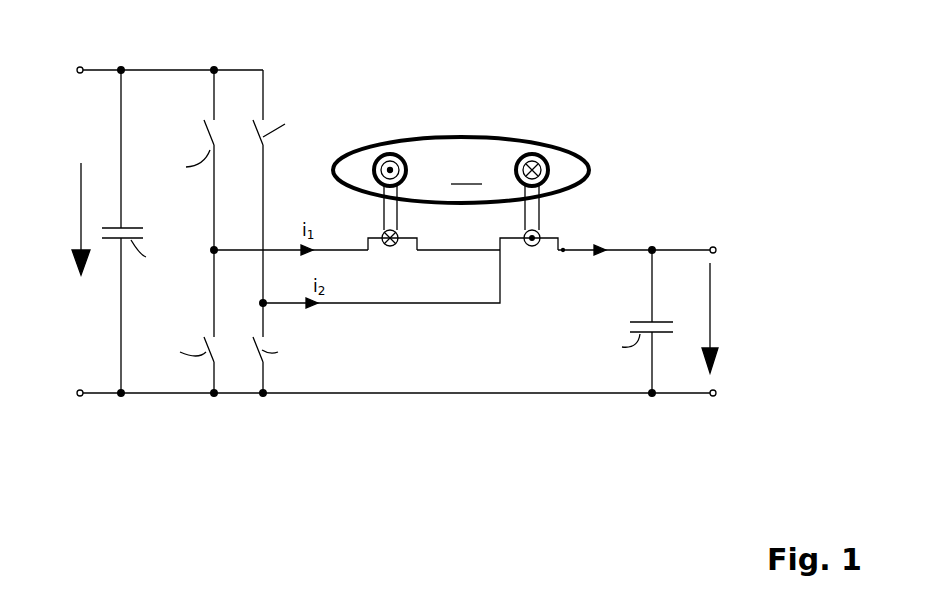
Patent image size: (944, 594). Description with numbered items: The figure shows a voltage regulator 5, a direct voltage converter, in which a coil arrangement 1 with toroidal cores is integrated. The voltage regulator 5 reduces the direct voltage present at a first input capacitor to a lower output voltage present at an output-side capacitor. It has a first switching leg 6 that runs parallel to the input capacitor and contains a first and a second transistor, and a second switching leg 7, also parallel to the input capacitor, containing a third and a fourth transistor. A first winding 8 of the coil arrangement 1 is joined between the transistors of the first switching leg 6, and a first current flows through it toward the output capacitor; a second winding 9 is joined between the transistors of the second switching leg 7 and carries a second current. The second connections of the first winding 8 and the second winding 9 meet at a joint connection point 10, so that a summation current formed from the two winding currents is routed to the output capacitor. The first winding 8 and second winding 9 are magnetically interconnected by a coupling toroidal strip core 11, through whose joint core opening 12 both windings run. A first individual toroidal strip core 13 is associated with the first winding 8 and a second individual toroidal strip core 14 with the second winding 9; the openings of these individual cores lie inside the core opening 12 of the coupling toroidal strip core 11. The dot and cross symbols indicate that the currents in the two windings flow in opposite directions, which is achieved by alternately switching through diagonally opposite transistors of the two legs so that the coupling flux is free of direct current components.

The coil arrangement 1 is at (396, 320).
The voltage regulator 5 is at (237, 263).
The first switching leg 6 is at (214, 95).
The second switching leg 7 is at (263, 95).
The first winding 8 is at (380, 165).
The second winding 9 is at (575, 159).
The joint connection point 10 is at (563, 250).
The coupling toroidal strip core 11 is at (462, 138).
The core opening 12 is at (466, 171).
The first individual toroidal strip core 13 is at (375, 159).
The second individual toroidal strip core 14 is at (553, 160).